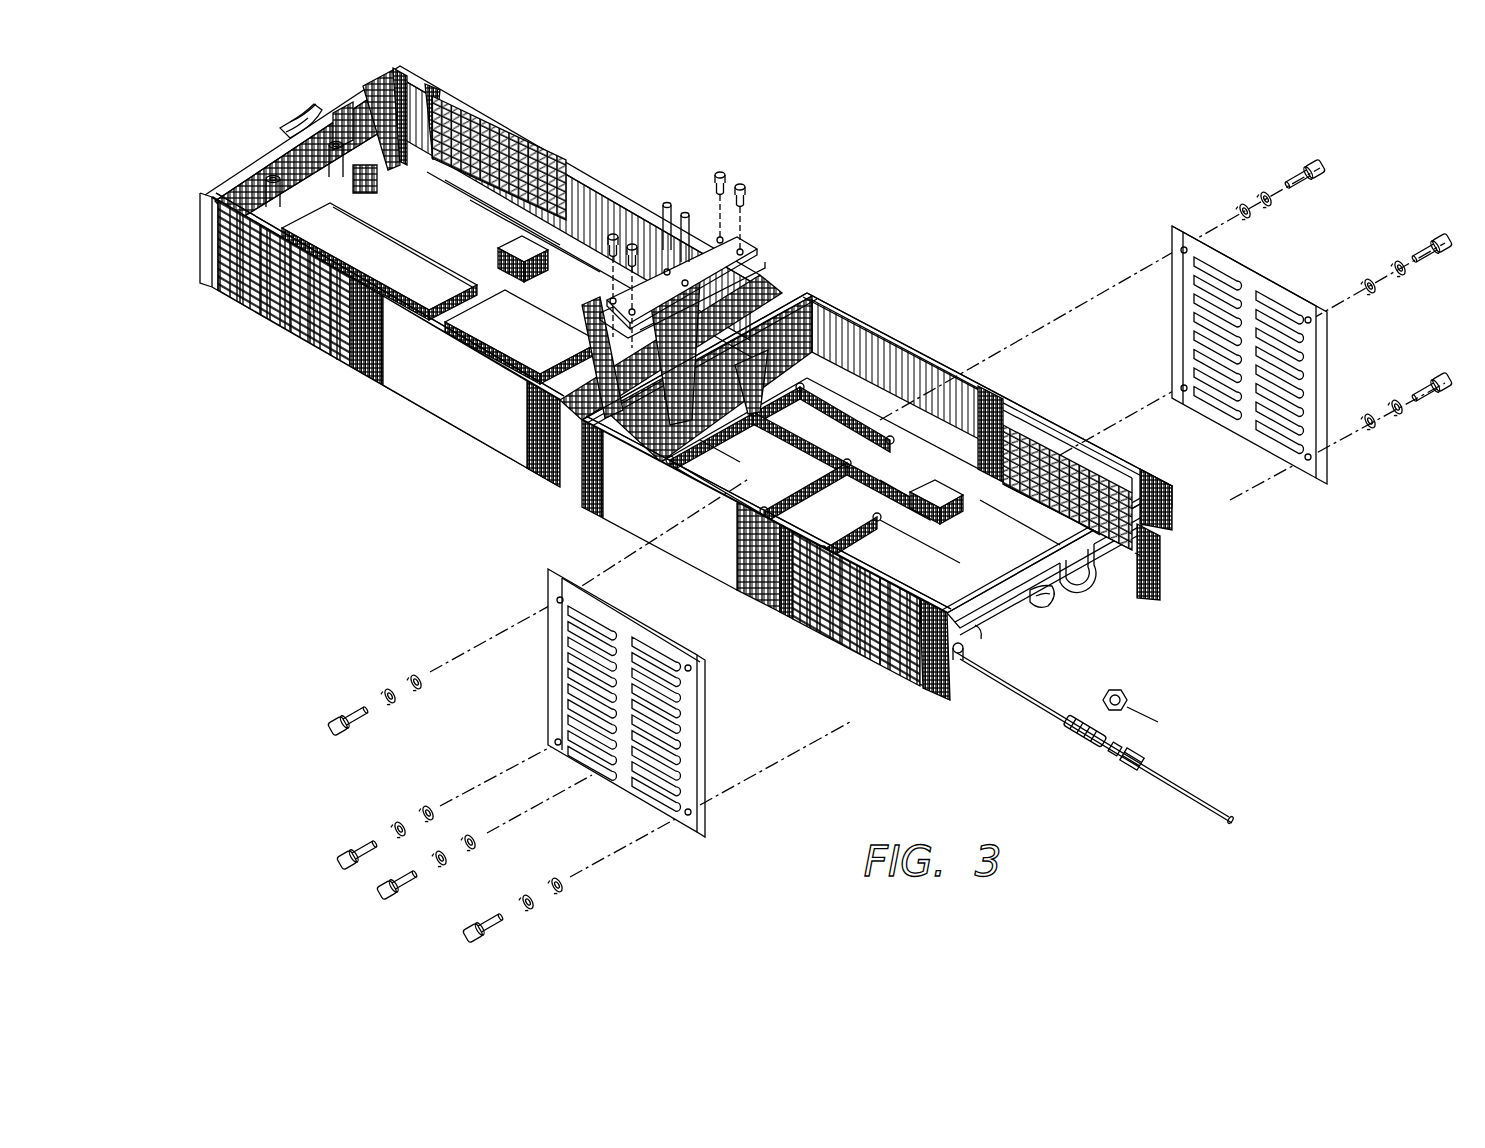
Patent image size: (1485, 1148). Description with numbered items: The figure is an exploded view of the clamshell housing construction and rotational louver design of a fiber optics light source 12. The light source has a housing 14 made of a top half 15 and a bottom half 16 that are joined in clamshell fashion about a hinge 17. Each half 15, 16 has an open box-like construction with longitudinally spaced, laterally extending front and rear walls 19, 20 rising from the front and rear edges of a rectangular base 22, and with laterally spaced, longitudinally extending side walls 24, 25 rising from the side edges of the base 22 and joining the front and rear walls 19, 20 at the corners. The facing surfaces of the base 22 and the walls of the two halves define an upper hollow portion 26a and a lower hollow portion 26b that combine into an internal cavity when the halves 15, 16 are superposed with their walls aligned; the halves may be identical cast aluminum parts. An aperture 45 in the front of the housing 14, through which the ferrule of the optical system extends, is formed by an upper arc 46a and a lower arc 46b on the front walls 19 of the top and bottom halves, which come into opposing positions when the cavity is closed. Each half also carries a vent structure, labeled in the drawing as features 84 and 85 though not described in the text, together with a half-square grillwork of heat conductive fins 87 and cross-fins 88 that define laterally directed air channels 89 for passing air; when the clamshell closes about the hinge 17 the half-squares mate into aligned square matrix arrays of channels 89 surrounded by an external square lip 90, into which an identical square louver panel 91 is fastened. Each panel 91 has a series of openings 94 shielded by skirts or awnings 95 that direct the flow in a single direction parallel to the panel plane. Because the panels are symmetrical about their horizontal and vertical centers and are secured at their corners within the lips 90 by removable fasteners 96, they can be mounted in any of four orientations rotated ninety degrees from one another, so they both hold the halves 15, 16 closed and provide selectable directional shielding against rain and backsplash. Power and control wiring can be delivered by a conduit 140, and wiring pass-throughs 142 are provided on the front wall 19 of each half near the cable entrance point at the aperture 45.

The fiber optics light source 12 is at (986, 248).
The housing 14 is at (843, 281).
The top half 15 is at (491, 276).
The bottom half 16 is at (877, 490).
The hinge 17 is at (745, 245).
The front wall 19 is at (225, 150).
The rear wall 20 is at (663, 380).
The rectangular base 22 is at (423, 245).
The side wall 24 is at (597, 183).
The side wall 25 is at (457, 397).
The upper hollow portion 26a is at (437, 160).
The lower hollow portion 26b is at (1068, 443).
The aperture 45 is at (1088, 590).
The upper arc 46a is at (297, 112).
The lower arc 46b is at (1050, 620).
The vent frame 84 is at (1028, 425).
The louver bars 85 is at (896, 660).
The heat conductive fins 87 is at (838, 650).
The cross-fins 88 is at (790, 628).
The air channels 89 is at (1043, 505).
The external square lip 90 is at (1315, 348).
The square louver panel 91 is at (703, 793).
The openings 94 is at (1192, 325).
The skirts or awnings 95 is at (590, 648).
The removable fasteners 96 is at (316, 728).
The conduit 140 is at (1170, 787).
The wiring pass-throughs 142 is at (978, 634).